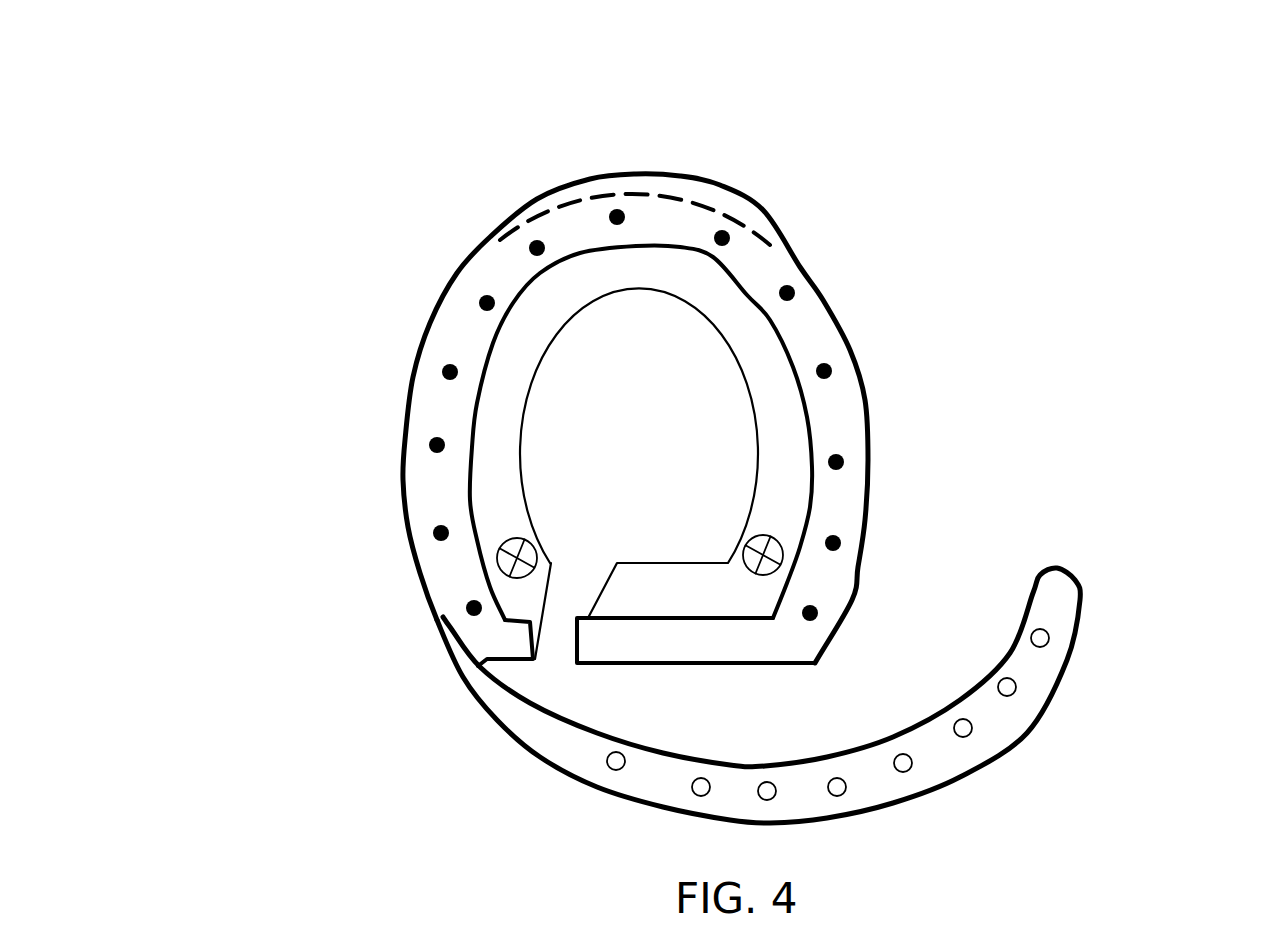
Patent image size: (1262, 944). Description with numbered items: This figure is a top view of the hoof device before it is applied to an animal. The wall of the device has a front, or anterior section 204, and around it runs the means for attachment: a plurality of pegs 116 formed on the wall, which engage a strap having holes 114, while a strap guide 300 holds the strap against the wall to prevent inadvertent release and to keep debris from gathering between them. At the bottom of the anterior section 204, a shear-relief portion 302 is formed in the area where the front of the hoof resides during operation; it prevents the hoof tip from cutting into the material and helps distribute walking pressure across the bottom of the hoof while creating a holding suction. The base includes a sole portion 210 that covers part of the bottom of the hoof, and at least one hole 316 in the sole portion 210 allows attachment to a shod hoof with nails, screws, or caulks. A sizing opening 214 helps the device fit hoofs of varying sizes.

The holes 114 is at (1017, 693).
The pegs 116 is at (433, 447).
The anterior section 204 is at (593, 225).
The sole portion 210 is at (770, 425).
The sizing opening 214 is at (562, 588).
The strap guide 300 is at (493, 350).
The shear-relief portion 302 is at (720, 213).
The hole 316 is at (777, 548).